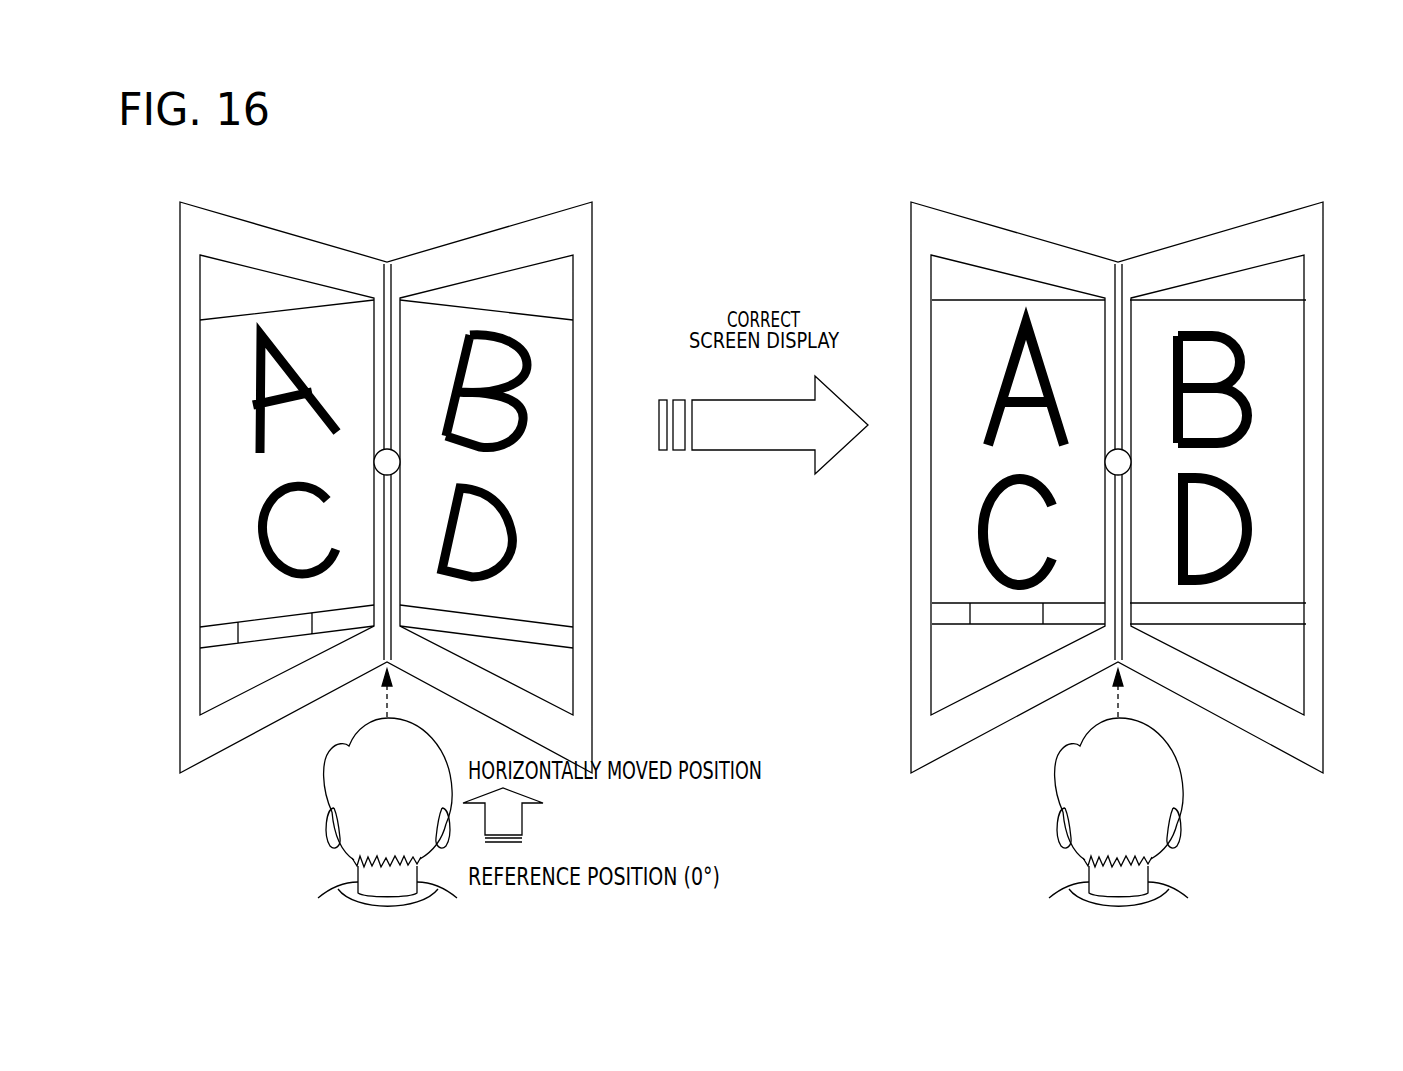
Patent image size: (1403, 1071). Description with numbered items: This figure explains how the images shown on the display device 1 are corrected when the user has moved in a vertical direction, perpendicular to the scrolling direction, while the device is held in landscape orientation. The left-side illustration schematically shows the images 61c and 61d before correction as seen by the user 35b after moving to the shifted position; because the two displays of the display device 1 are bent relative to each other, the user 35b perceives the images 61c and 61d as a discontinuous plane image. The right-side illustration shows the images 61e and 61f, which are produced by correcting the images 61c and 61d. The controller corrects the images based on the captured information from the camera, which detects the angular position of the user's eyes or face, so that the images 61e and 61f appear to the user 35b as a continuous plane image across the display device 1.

The display device 1 is at (513, 190).
The image before correction 61c is at (230, 450).
The image before correction 61d is at (550, 510).
The corrected image 61e is at (948, 568).
The corrected image 61f is at (1282, 540).
The user 35b is at (318, 817).